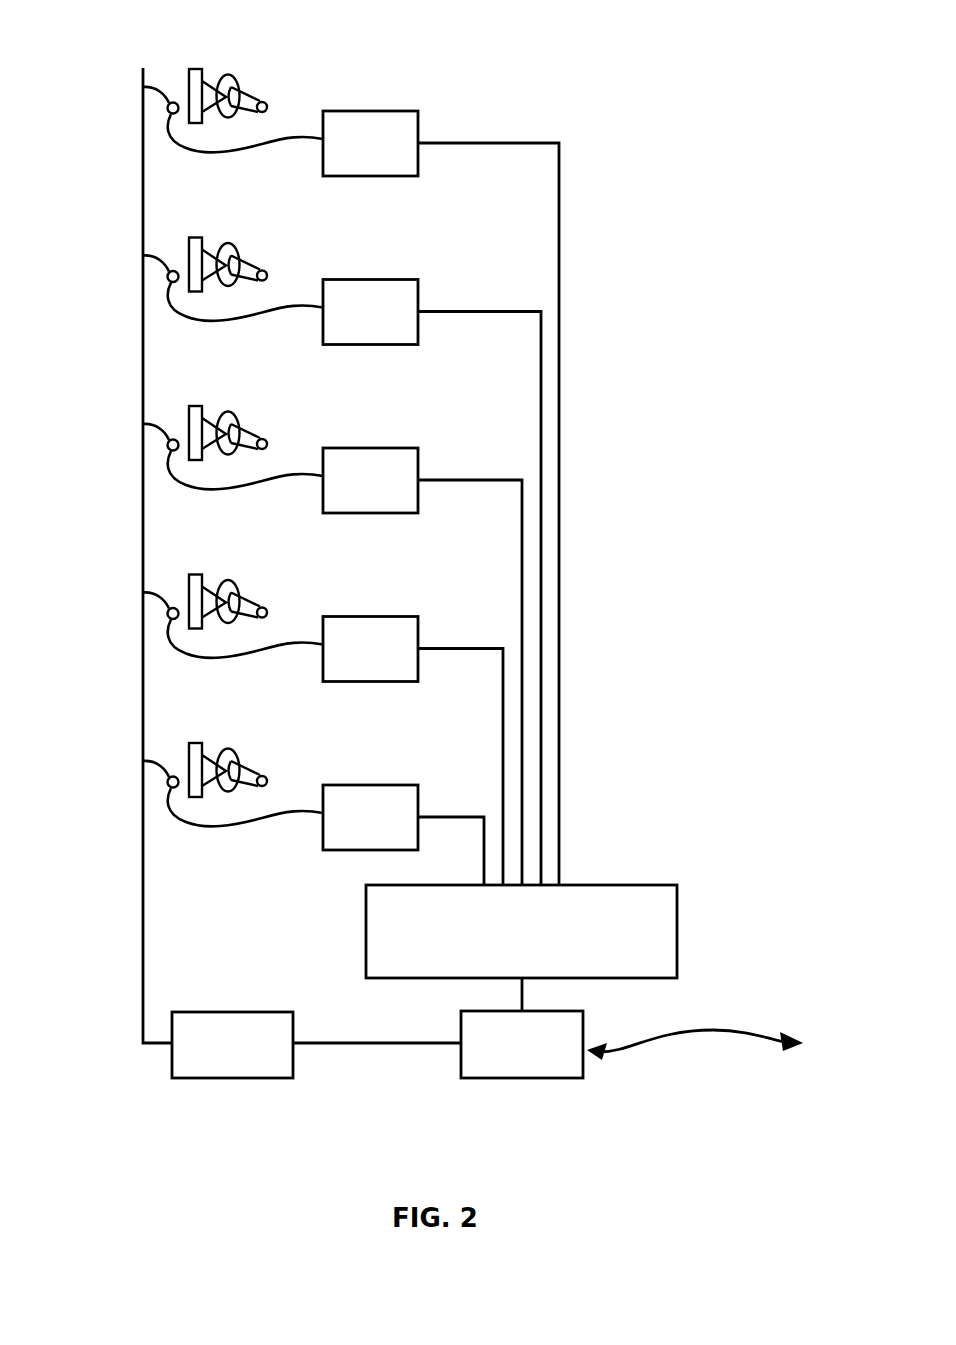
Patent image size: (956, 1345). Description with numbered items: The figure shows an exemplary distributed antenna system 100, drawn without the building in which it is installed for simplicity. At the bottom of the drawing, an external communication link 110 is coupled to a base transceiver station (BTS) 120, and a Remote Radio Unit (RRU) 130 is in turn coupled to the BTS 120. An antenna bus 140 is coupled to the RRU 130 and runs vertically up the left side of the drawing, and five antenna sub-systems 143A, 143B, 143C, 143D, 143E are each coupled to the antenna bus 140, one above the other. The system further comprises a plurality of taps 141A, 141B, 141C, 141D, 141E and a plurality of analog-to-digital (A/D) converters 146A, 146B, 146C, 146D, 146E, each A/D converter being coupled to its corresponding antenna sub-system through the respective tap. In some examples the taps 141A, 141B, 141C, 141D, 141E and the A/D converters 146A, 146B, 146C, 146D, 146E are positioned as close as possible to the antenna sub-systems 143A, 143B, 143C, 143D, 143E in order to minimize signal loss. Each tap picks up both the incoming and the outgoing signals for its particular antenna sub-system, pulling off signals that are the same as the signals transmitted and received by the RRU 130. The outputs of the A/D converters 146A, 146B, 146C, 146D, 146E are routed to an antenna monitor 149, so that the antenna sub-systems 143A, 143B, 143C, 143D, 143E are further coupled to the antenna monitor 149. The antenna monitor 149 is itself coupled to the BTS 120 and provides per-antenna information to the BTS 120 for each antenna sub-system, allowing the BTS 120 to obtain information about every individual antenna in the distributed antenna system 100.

The distributed antenna system 100 is at (282, 1144).
The external communication link 110 is at (667, 1040).
The base transceiver station (BTS) 120 is at (522, 1044).
The Remote Radio Unit (RRU) 130 is at (316, 1045).
The antenna bus 140 is at (140, 157).
The tap 141A is at (233, 770).
The tap 141B is at (233, 602).
The tap 141C is at (233, 433).
The tap 141D is at (233, 265).
The tap 141E is at (175, 102).
The antenna sub-system 143A is at (257, 768).
The antenna sub-system 143B is at (257, 600).
The antenna sub-system 143C is at (257, 431).
The antenna sub-system 143D is at (258, 263).
The antenna sub-system 143E is at (243, 84).
The analog-to-digital (A/D) converter 146A is at (403, 835).
The analog-to-digital (A/D) converter 146B is at (413, 751).
The analog-to-digital (A/D) converter 146C is at (422, 666).
The analog-to-digital (A/D) converter 146D is at (432, 583).
The analog-to-digital (A/D) converter 146E is at (441, 498).
The antenna monitor 149 is at (521, 948).